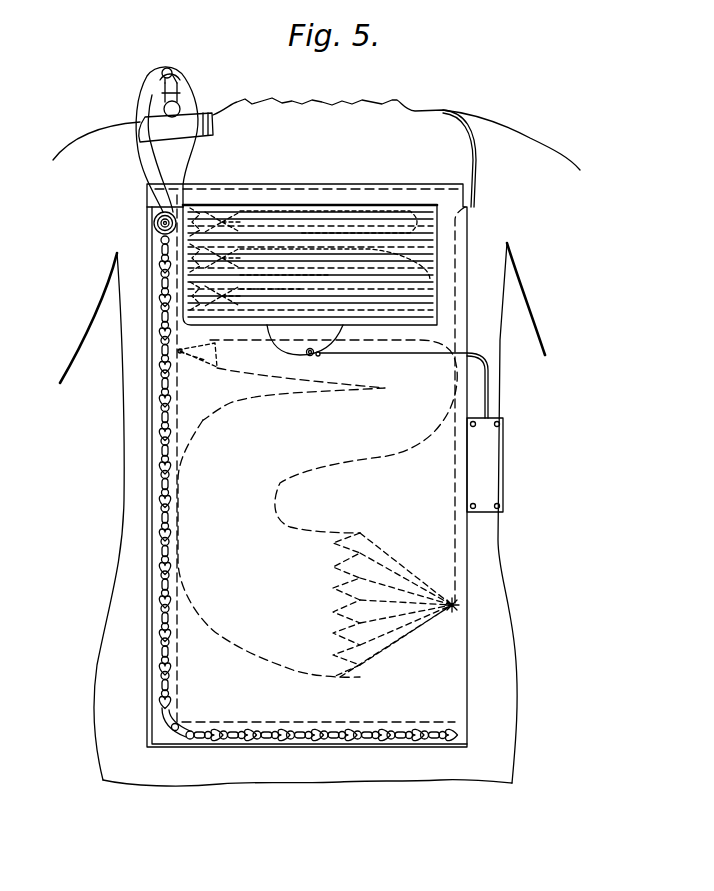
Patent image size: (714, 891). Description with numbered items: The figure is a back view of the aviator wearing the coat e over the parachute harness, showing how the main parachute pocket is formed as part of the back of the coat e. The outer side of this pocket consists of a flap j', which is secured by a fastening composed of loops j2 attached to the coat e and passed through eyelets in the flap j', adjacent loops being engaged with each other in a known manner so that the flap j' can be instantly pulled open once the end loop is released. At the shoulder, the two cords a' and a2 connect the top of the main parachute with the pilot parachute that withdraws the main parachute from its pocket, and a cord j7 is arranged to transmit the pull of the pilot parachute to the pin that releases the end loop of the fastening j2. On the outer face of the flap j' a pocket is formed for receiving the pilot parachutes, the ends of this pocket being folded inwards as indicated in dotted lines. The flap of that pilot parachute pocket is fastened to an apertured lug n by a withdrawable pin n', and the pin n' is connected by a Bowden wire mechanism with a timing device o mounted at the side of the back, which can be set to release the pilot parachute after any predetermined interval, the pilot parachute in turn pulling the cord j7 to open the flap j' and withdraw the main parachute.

The cord a' is at (139, 92).
The cord a2 is at (195, 100).
The cord j7 is at (146, 168).
The coat e is at (125, 402).
The loops j2 is at (158, 468).
The flap j' is at (318, 508).
The apertured lug n is at (373, 371).
The withdrawable pin n' is at (339, 366).
The timing device o is at (496, 462).